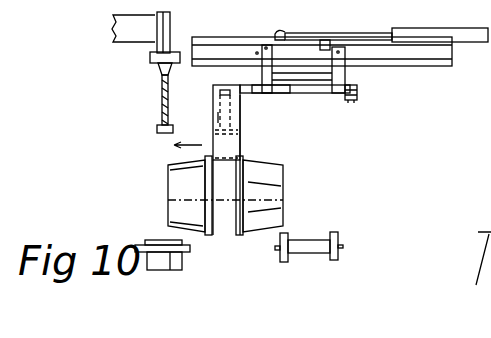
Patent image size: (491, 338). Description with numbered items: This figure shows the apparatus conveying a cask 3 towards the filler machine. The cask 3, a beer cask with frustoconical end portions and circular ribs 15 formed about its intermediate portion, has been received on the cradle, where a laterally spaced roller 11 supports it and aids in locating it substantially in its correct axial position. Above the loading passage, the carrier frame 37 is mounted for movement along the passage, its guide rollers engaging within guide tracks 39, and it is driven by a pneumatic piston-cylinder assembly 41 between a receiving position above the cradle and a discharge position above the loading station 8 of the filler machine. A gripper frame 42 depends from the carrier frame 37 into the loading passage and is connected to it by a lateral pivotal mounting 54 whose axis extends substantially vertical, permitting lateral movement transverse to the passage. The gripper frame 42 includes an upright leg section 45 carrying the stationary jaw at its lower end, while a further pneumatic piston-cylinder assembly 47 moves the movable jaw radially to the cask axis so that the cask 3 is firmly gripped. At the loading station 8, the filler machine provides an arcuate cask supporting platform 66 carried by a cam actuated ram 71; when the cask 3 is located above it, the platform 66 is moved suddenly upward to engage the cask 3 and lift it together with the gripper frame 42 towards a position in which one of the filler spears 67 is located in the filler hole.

The filler spear 67 is at (162, 100).
The guide track 39 is at (213, 40).
The pneumatic piston-cylinder assembly 41 is at (463, 40).
The pivotal mounting 54 is at (358, 92).
The carrier frame 37 is at (330, 75).
The gripper frame 42 is at (204, 91).
The pneumatic piston-cylinder assembly 47 is at (218, 118).
The upright leg section 45 is at (240, 110).
The circular rib 15 is at (205, 153).
The cask 3 is at (272, 190).
The loading station 8 is at (148, 233).
The cask supporting platform 66 is at (185, 245).
The cam actuated ram 71 is at (165, 265).
The roller 11 is at (308, 264).